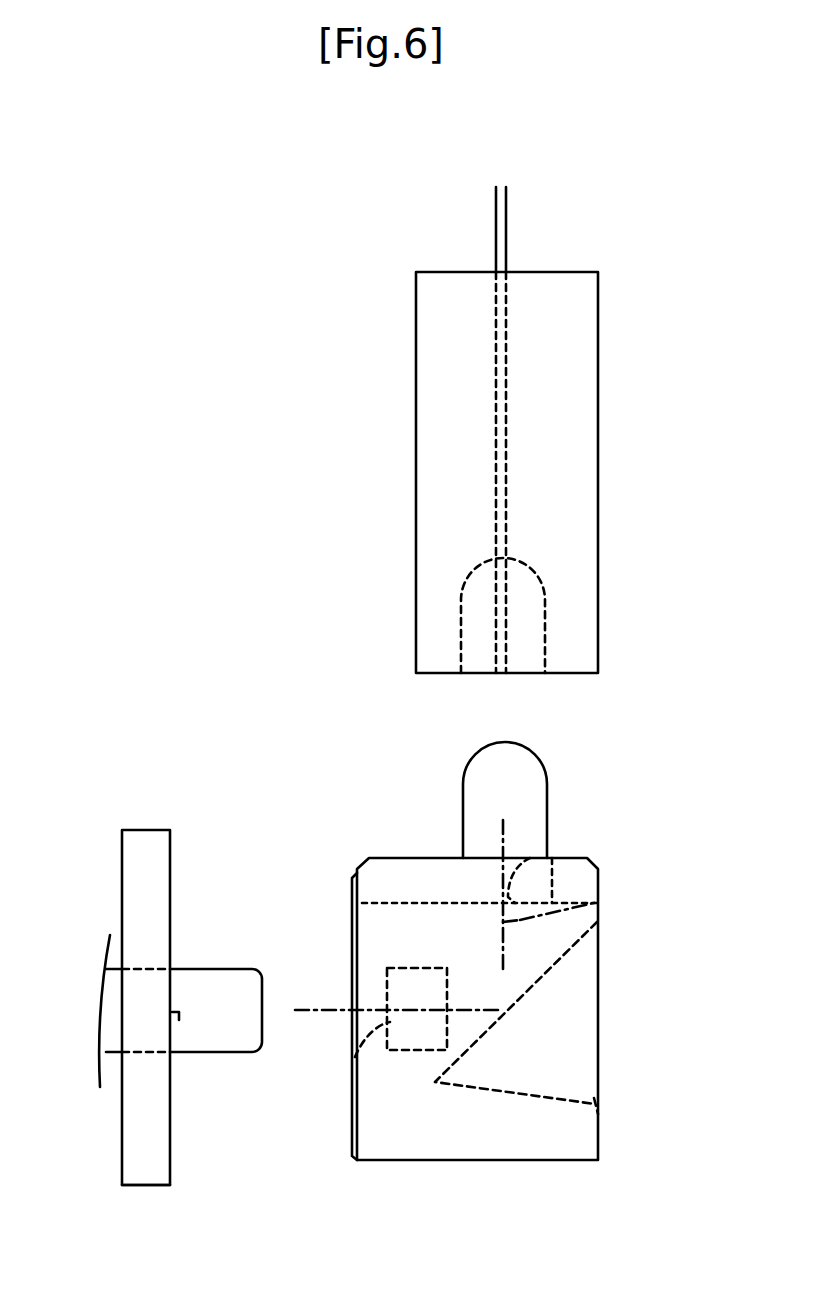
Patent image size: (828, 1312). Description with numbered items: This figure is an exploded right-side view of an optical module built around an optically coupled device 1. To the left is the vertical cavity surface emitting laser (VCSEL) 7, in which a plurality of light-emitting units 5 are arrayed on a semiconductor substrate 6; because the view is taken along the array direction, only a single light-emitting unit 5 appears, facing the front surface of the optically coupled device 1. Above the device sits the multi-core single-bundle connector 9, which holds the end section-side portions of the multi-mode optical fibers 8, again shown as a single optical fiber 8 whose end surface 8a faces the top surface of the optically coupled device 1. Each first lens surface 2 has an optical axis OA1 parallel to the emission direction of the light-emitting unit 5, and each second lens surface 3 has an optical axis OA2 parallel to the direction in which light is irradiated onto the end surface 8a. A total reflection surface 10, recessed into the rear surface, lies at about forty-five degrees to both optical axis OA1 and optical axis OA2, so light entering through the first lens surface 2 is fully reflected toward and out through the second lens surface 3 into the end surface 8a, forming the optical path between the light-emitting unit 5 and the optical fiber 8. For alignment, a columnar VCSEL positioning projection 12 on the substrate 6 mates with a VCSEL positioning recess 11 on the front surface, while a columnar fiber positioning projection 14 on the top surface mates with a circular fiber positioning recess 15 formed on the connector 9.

The optically coupled device 1 is at (360, 870).
The first lens surface 2 is at (350, 1075).
The second lens surface 3 is at (530, 858).
The light-emitting unit 5 is at (176, 1015).
The semiconductor substrate 6 is at (145, 1187).
The vertical cavity surface emitting laser (VCSEL) 7 is at (148, 828).
The multi-mode optical fiber 8 is at (496, 222).
The end surface 8a is at (503, 673).
The multi-core single-bundle connector 9 is at (416, 462).
The total reflection surface 10 is at (510, 1008).
The VCSEL positioning recess 11 is at (447, 983).
The VCSEL positioning projection 12 is at (198, 969).
The fiber positioning projection 14 is at (462, 800).
The fiber positioning recess 15 is at (545, 662).
The optical axis of the first lens surface OA1 is at (340, 1012).
The optical axis of the second lens surface OA2 is at (600, 903).